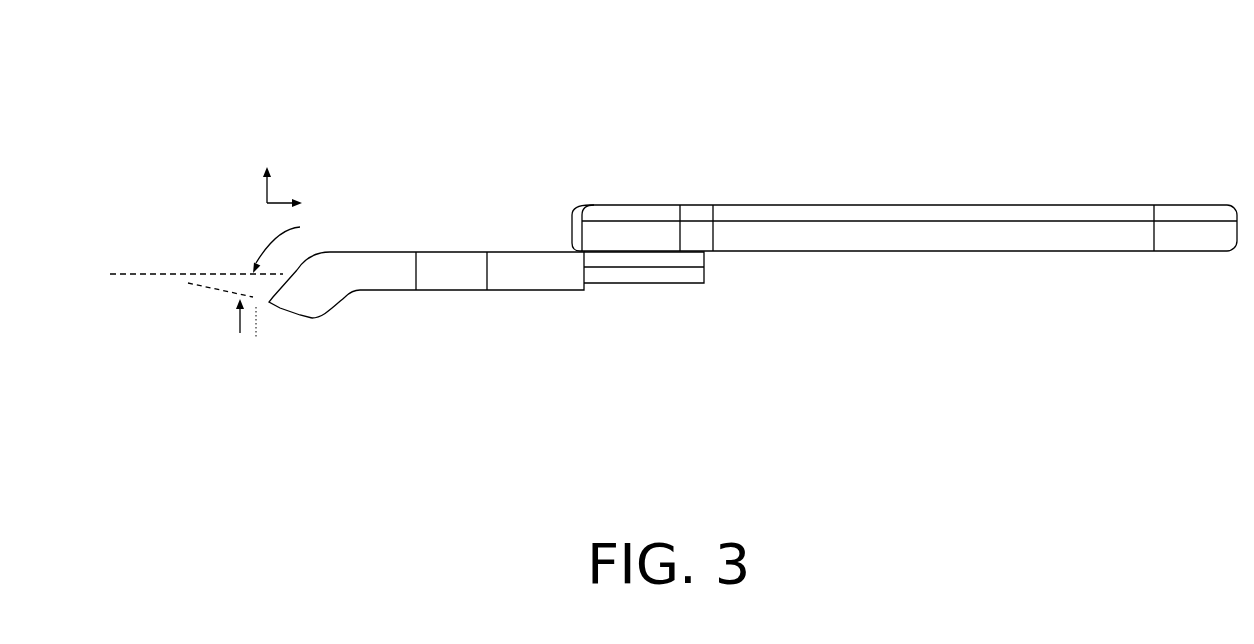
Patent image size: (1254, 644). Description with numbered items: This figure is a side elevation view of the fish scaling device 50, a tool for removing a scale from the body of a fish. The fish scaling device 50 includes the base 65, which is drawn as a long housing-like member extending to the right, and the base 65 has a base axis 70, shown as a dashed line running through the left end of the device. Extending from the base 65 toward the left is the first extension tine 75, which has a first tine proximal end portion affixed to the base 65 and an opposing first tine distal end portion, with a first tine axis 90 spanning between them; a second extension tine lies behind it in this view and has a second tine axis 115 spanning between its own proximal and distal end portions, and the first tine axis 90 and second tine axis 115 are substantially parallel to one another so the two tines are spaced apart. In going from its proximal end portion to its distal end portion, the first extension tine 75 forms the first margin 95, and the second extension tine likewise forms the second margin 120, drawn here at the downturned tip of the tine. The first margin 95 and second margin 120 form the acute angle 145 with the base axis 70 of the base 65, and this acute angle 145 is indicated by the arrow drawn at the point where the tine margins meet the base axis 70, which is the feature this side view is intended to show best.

The fish scaling device 50 is at (750, 77).
The base 65 is at (842, 250).
The base axis 70 is at (157, 274).
The first extension tine 75 is at (283, 308).
The first tine axis 90 is at (223, 290).
The second tine axis 115 is at (188, 325).
The first margin 95 is at (307, 316).
The second margin 120 is at (290, 294).
The acute angle 145 is at (294, 245).